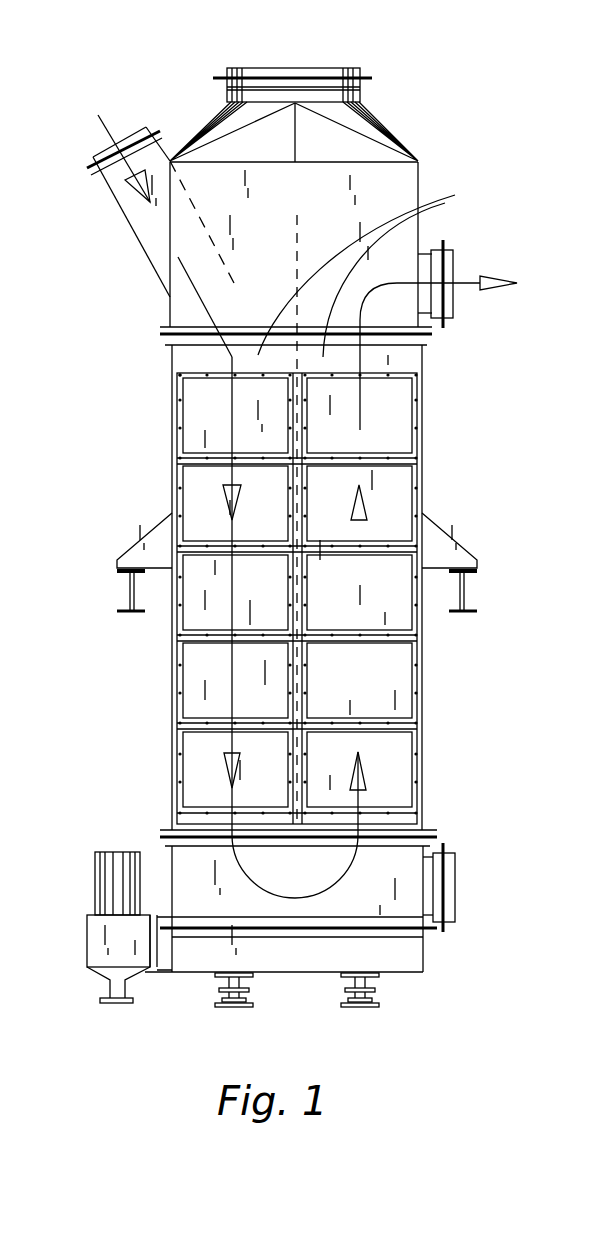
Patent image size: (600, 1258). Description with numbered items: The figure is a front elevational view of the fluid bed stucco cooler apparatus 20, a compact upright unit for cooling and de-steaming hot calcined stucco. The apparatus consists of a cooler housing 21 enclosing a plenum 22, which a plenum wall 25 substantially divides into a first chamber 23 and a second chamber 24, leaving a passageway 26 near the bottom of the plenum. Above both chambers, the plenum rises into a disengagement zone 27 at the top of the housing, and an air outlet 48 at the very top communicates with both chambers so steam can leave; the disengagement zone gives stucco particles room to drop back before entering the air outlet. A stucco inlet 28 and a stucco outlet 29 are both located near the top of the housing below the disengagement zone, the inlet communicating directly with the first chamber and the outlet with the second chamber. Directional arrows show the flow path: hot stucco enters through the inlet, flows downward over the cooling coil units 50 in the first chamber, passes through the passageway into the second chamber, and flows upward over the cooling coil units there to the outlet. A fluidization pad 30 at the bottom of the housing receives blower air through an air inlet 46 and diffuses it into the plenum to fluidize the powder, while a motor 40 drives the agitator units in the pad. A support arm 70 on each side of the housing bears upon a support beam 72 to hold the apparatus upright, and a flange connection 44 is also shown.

The fluid bed stucco cooler apparatus 20 is at (148, 410).
The cooler housing 21 is at (168, 308).
The plenum 22 is at (379, 507).
The first chamber 23 is at (212, 360).
The second chamber 24 is at (388, 360).
The plenum wall 25 is at (297, 517).
The passageway 26 is at (280, 873).
The disengagement zone 27 is at (318, 193).
The stucco inlet 28 is at (103, 152).
The stucco outlet 29 is at (455, 268).
The fluidization pad 30 is at (402, 953).
The motor 40 is at (105, 943).
The lower flange connection 44 is at (455, 890).
The air inlet 46 is at (305, 973).
The air outlet 48 is at (304, 68).
The cooling coil units 50 is at (198, 488).
The support arm 70 is at (447, 541).
The support beam 72 is at (465, 614).